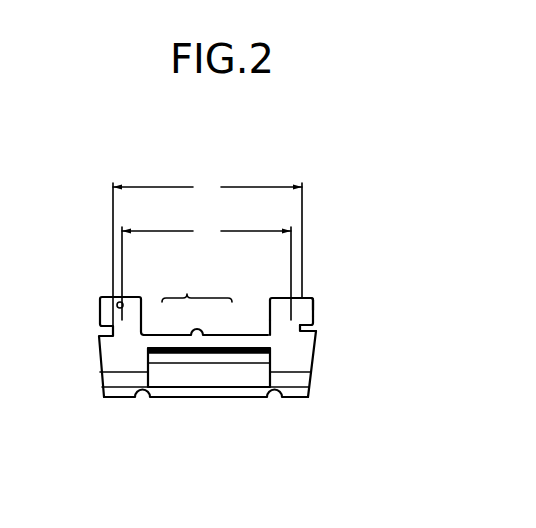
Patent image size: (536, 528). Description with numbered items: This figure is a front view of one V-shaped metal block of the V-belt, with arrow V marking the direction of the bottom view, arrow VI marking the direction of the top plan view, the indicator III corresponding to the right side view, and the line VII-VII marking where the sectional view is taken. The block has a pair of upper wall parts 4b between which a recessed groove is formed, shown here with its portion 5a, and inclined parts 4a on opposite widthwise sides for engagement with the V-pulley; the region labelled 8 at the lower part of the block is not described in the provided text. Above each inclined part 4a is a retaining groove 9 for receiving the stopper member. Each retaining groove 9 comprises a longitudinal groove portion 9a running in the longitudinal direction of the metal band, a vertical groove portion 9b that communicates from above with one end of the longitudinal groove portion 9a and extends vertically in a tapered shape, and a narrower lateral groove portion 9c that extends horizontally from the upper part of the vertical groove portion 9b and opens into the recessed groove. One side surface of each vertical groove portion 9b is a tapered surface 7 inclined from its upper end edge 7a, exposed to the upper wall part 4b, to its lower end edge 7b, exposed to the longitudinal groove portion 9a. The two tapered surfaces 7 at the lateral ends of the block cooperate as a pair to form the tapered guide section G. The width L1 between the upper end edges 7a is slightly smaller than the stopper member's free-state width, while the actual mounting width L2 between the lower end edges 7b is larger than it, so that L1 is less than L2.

The inclined part 4a is at (101, 357).
The upper wall part 4b is at (279, 298).
The base plate 5a is at (202, 329).
The tapered surface 7 is at (124, 308).
The upper end edge of tapered surface 7a is at (296, 298).
The lower end edge of tapered surface 7b is at (291, 360).
The bottom portion 8 is at (180, 380).
The retaining groove 9 is at (302, 327).
The longitudinal groove portion 9a is at (318, 332).
The vertical groove portion 9b is at (320, 306).
The lateral groove portion 9c is at (267, 316).
The tapered guide section G is at (197, 284).
The width between upper end edges L1 is at (206, 270).
The actual mounting width L2 is at (207, 252).
The right side view direction III is at (350, 329).
The arrow V is at (208, 476).
The arrow VI is at (205, 160).
The section line VII- VII is at (206, 264).